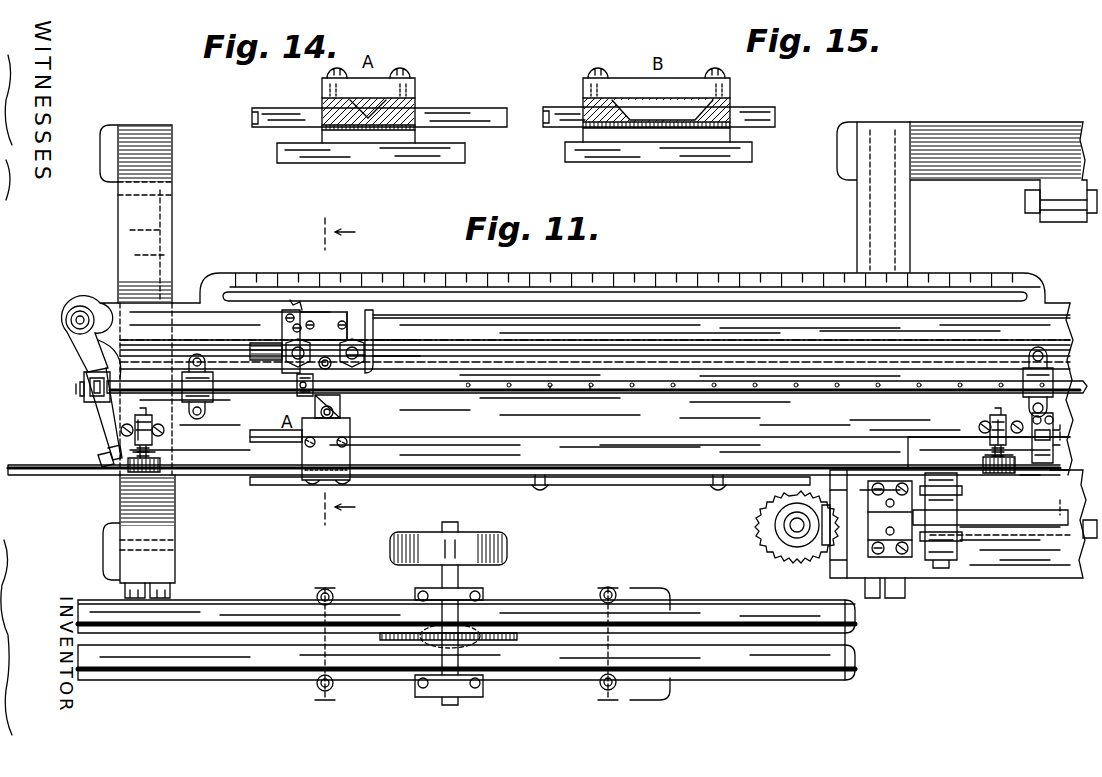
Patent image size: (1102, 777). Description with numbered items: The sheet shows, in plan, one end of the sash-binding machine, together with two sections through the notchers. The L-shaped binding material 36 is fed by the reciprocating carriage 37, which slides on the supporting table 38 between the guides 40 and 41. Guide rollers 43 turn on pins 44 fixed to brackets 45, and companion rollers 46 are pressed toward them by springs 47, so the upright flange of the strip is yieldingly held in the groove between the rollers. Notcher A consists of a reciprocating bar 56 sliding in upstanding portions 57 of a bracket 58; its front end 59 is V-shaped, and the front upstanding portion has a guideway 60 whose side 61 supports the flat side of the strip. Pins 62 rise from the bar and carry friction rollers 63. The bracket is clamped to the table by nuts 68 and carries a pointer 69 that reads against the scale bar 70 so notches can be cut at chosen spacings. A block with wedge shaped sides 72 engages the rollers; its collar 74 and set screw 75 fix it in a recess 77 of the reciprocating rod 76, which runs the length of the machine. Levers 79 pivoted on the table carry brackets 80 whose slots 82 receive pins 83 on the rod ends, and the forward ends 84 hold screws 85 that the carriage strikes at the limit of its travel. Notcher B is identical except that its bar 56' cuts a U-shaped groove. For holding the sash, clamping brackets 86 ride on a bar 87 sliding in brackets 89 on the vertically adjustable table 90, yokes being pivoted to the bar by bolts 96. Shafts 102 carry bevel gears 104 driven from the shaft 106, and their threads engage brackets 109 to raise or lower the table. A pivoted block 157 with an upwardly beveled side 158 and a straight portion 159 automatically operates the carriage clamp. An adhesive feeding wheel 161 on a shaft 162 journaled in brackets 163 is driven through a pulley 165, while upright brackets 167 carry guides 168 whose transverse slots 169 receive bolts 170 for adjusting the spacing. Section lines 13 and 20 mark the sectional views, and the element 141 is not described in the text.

In FIG. 11, the section line 13 is at (334, 372).
In FIG. 11, the section line 20 is at (1050, 500).
In FIG. 11, the binding material 36 is at (528, 464).
In FIG. 11, the reciprocating carriage 37 is at (930, 445).
In FIG. 11, the supporting table 38 is at (840, 406).
In FIG. 11, the guide 40 is at (656, 432).
In FIG. 11, the guide 41 is at (642, 472).
In FIG. 11, the roller 43 is at (128, 472).
In FIG. 11, the pin 44 is at (160, 440).
In FIG. 11, the bracket 45 is at (150, 425).
In FIG. 11, the roller 46 is at (158, 459).
In FIG. 11, the spring 47 is at (135, 440).
In FIG. 11, the reciprocating bar 56 is at (374, 302).
In FIG. 15, the reciprocating bar 56' is at (659, 86).
In FIG. 11, the upstanding portion 57 is at (340, 312).
In FIG. 11, the bracket 58 is at (380, 345).
In FIG. 14, the front end 59 is at (415, 100).
In FIG. 14, the guideway 60 is at (322, 126).
In FIG. 14, the side 61 is at (330, 131).
In FIG. 11, the pin 62 is at (358, 322).
In FIG. 11, the friction roller 63 is at (200, 378).
In FIG. 11, the nut 68 is at (287, 345).
In FIG. 11, the pointer 69 is at (292, 295).
In FIG. 11, the scale bar 70 is at (602, 275).
In FIG. 11, the wedge shaped side 72 is at (268, 398).
In FIG. 11, the collar 74 is at (296, 385).
In FIG. 11, the set screw 75 is at (296, 392).
In FIG. 11, the reciprocating rod 76 is at (548, 389).
In FIG. 11, the recess 77 is at (628, 389).
In FIG. 11, the lever 79 is at (80, 352).
In FIG. 11, the bracket 80 is at (92, 404).
In FIG. 11, the slot 82 is at (80, 388).
In FIG. 11, the pin 83 is at (78, 398).
In FIG. 11, the forward end 84 is at (118, 450).
In FIG. 11, the screw 85 is at (98, 458).
In FIG. 15, the clamping bracket 86 is at (730, 98).
In FIG. 11, the bar 87 is at (995, 527).
In FIG. 11, the bracket 89 is at (892, 560).
In FIG. 11, the vertically adjustable table 90 is at (972, 580).
In FIG. 11, the bolt 96 is at (940, 565).
In FIG. 11, the shaft 102 is at (783, 530).
In FIG. 11, the bevel gear 104 is at (770, 518).
In FIG. 11, the shaft 106 is at (1090, 540).
In FIG. 11, the bracket 109 is at (822, 545).
In FIG. 11, the bracket 141 is at (1030, 210).
In FIG. 11, the block 157 is at (1054, 432).
In FIG. 11, the upwardly beveled side 158 is at (1071, 475).
In FIG. 11, the straight portion 159 is at (1036, 482).
In FIG. 11, the feeding wheel 161 is at (410, 642).
In FIG. 11, the shaft 162 is at (456, 712).
In FIG. 11, the bracket 163 is at (543, 690).
In FIG. 11, the pulley 165 is at (507, 538).
In FIG. 11, the upright bracket 167 is at (320, 637).
In FIG. 11, the guide 168 is at (845, 612).
In FIG. 11, the transverse slot 169 is at (322, 588).
In FIG. 11, the bolt 170 is at (335, 588).